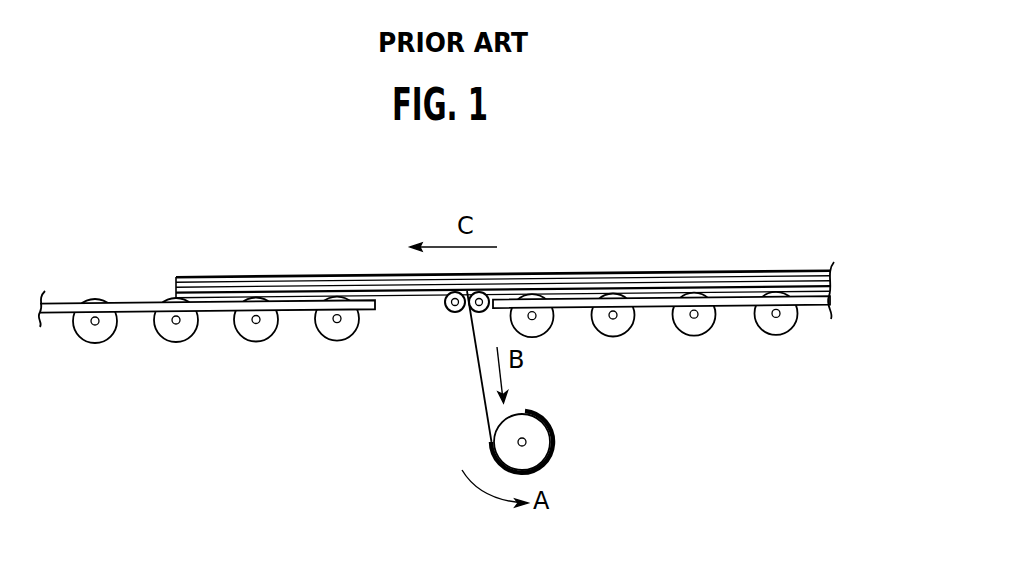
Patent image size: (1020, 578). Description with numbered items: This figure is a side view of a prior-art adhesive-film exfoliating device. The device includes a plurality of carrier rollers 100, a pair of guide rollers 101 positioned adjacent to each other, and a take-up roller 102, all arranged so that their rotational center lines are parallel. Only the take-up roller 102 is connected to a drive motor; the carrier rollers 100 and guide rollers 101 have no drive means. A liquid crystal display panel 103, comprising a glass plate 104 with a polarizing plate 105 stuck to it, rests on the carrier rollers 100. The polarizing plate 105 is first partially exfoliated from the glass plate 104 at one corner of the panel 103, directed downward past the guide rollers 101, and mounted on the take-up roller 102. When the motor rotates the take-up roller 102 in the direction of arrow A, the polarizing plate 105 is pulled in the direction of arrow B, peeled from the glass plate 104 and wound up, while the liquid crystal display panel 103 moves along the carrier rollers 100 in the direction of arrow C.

The carrier rollers 100 is at (250, 334).
The guide rollers 101 is at (478, 314).
The take-up roller 102 is at (540, 441).
The liquid crystal display panel 103 is at (760, 272).
The glass plate 104 is at (813, 268).
The polarizing plate 105 is at (699, 270).